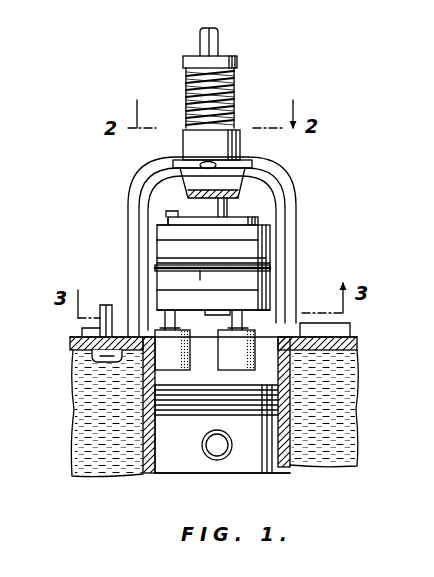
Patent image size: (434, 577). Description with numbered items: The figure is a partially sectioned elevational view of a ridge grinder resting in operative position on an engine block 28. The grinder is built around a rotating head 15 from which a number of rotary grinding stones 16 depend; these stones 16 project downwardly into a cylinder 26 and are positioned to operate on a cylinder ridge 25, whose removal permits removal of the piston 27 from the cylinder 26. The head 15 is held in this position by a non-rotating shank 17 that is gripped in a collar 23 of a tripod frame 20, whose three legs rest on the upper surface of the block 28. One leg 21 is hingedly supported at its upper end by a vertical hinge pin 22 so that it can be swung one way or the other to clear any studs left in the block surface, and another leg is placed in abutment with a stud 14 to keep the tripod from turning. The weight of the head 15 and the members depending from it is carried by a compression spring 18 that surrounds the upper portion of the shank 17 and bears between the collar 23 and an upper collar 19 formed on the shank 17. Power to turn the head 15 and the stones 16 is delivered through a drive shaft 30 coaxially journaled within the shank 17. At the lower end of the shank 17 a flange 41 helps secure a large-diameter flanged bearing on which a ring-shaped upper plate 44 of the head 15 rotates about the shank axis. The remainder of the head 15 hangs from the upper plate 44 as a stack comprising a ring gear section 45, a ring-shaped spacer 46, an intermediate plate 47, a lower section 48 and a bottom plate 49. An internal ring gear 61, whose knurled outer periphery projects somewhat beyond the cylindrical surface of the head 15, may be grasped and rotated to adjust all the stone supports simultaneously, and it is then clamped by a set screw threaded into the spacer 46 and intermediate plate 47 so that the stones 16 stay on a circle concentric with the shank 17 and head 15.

The drive shaft 30 is at (219, 43).
The upper collar 19 is at (238, 62).
The compression spring 18 is at (233, 111).
The collar 23 is at (238, 144).
The vertical hinge pin 22 is at (186, 161).
The leg 21 is at (196, 183).
The shank 17 is at (228, 208).
The tripod frame 20 is at (287, 172).
The flange 41 is at (166, 214).
The rotating head 15 is at (270, 241).
The upper plate 44 is at (160, 228).
The ring gear section 45 is at (163, 240).
The spacer 46 is at (265, 260).
The internal ring gear 61 is at (165, 273).
The intermediate plate 47 is at (206, 271).
The lower section 48 is at (262, 292).
The bottom plate 49 is at (265, 306).
The stud 14 is at (107, 305).
The engine block 28 is at (352, 335).
The rotary grinding stones 16 is at (225, 375).
The piston 27 is at (176, 472).
The cylinder ridge 25 is at (277, 337).
The cylinder 26 is at (273, 470).